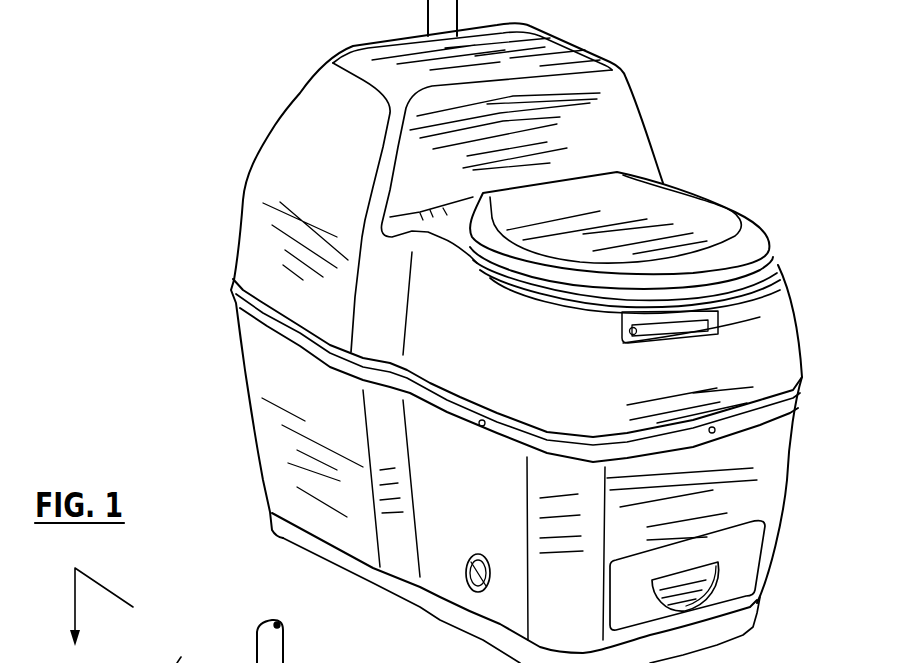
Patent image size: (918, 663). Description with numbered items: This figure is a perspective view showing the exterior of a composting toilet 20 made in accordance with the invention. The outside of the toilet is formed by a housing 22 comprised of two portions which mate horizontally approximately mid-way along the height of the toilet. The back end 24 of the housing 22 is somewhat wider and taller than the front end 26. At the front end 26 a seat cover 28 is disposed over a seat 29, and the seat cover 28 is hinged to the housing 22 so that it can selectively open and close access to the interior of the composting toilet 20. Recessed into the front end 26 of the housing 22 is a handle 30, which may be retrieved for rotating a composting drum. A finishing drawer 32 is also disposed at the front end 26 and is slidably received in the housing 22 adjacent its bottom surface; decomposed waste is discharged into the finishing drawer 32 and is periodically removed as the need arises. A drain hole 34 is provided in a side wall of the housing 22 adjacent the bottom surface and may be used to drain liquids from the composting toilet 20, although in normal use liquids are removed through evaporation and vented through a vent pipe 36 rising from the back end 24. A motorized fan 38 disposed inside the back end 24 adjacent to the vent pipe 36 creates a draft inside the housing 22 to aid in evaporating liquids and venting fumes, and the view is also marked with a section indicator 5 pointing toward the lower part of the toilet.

The section line 5-5 view direction 5 is at (101, 611).
The composting toilet 20 is at (220, 121).
The housing 22 is at (257, 252).
The back end 24 is at (628, 128).
The front end 26 is at (800, 340).
The seat cover 28 is at (718, 220).
The seat 29 is at (775, 263).
The handle 30 is at (673, 327).
The finishing drawer 32 is at (753, 540).
The drain hole 34 is at (466, 559).
The vent pipe 36 is at (433, 16).
The motorized fan 38 is at (180, 645).